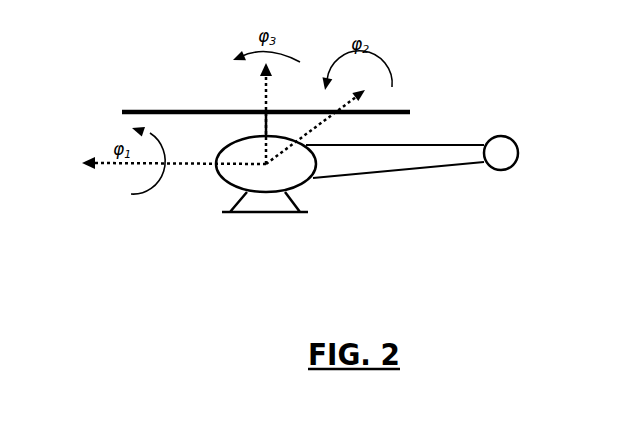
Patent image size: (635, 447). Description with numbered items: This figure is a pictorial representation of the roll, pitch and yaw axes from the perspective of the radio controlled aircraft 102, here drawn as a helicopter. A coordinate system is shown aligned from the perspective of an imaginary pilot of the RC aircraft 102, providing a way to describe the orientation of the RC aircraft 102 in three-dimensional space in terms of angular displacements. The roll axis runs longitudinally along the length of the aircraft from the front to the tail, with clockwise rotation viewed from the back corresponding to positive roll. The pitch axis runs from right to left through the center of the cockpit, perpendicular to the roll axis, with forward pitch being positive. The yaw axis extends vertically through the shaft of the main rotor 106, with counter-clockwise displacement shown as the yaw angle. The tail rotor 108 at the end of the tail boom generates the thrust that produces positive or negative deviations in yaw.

The radio controlled aircraft 102 is at (350, 162).
The main rotor 106 is at (200, 111).
The tail rotor 108 is at (500, 135).